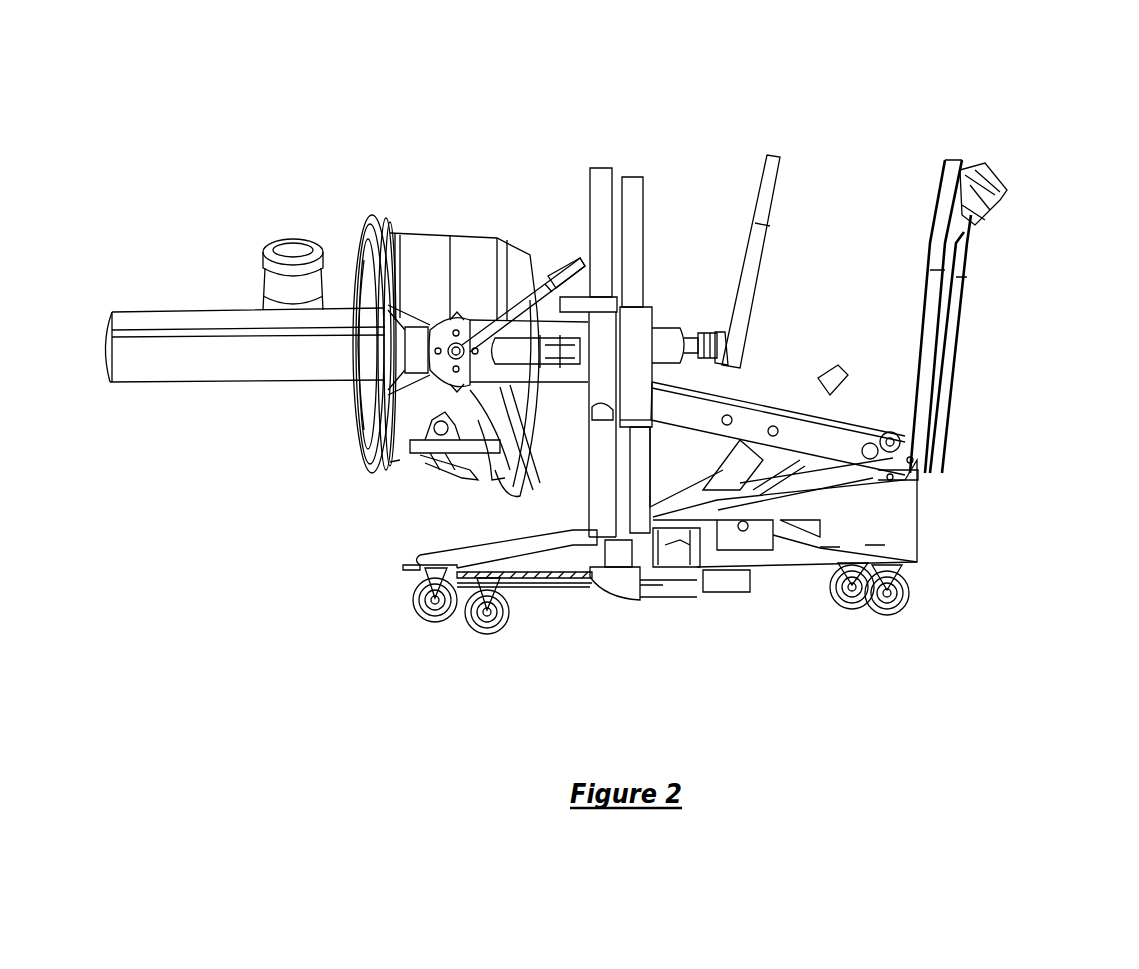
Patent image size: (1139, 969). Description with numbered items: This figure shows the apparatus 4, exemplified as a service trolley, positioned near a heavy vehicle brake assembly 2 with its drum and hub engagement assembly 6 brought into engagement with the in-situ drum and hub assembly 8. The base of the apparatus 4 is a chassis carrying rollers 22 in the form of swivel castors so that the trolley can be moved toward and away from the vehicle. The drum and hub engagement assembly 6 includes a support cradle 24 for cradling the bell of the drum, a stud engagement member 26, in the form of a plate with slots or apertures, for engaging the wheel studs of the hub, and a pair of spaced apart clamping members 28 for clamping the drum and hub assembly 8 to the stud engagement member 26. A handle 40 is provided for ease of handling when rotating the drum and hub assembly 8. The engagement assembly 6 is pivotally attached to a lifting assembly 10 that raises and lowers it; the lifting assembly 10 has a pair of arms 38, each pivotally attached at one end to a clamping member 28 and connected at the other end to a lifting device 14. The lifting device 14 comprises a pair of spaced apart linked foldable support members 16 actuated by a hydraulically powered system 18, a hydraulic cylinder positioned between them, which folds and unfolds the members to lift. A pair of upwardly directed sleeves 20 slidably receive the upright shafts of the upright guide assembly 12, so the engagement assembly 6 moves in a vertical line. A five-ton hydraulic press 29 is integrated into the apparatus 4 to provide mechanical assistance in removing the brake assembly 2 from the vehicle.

The heavy vehicle brake assembly 2 is at (346, 193).
The apparatus 4 is at (1066, 252).
The drum and hub engagement assembly 6 is at (667, 124).
The drum and hub assembly 8 is at (455, 195).
The lifting assembly 10 is at (770, 315).
The upright guide assembly 12 is at (574, 609).
The lifting device 14 is at (849, 406).
The foldable support members 16 is at (830, 440).
The hydraulically powered system 18 is at (720, 487).
The sleeves 20 is at (642, 335).
The rollers 22 is at (410, 607).
The support cradle 24 is at (423, 445).
The stud engagement member 26 is at (535, 473).
The clamping members 28 is at (387, 373).
The hydraulic press 29 is at (777, 260).
The arms 38 is at (567, 372).
The handle 40 is at (570, 266).